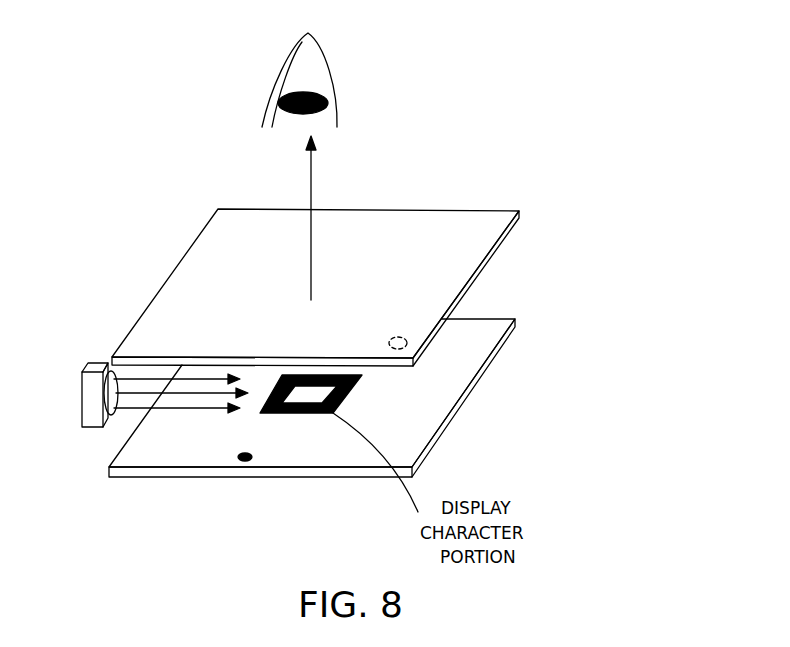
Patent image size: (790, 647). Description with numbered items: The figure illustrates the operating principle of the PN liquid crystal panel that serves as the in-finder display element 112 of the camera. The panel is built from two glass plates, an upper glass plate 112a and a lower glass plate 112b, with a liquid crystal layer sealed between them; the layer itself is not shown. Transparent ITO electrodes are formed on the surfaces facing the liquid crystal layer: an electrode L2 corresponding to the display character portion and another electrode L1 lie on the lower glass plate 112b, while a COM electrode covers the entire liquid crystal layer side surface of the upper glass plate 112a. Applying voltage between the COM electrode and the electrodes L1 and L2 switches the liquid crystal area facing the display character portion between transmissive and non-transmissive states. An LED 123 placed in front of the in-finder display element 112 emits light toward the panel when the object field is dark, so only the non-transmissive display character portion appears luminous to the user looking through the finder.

The in-finder display element 112 is at (593, 146).
The upper glass plate 112a is at (474, 212).
The lower glass plate 112b is at (405, 438).
The LED 123 is at (83, 370).
The electrode L1 is at (243, 461).
The electrode L2 is at (302, 400).
The COM electrode COM is at (395, 353).